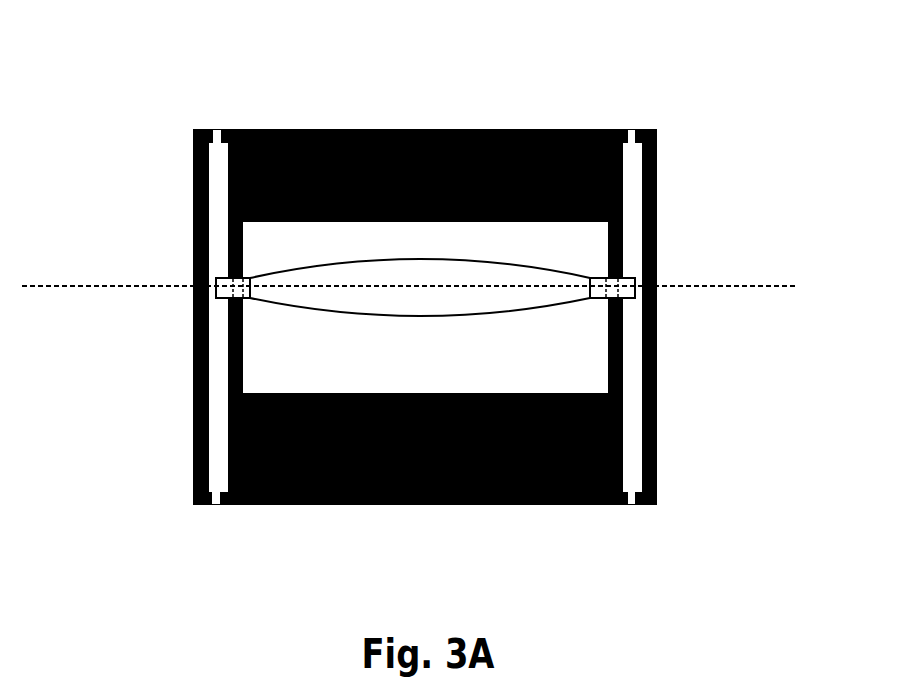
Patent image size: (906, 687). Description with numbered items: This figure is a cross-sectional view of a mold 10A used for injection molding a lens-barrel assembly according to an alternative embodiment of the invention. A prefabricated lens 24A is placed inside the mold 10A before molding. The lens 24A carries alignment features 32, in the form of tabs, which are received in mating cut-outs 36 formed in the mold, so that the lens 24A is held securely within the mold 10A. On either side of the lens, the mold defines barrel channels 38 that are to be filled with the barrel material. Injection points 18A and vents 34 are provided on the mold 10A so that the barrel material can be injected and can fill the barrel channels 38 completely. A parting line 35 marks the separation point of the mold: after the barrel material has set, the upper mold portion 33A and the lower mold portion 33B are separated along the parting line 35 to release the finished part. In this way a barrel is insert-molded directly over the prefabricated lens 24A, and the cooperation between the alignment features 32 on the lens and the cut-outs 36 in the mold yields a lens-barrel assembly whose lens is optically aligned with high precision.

The mold 10A is at (693, 135).
The injection points 18A is at (247, 112).
The prefabricated lens 24A is at (505, 332).
The alignment features 32 is at (264, 318).
The upper mold portion 33A is at (680, 214).
The lower mold portion 33B is at (729, 400).
The vents 34 is at (602, 517).
The parting line 35 is at (57, 263).
The cut-outs 36 is at (224, 276).
The barrel channels 38 is at (215, 384).